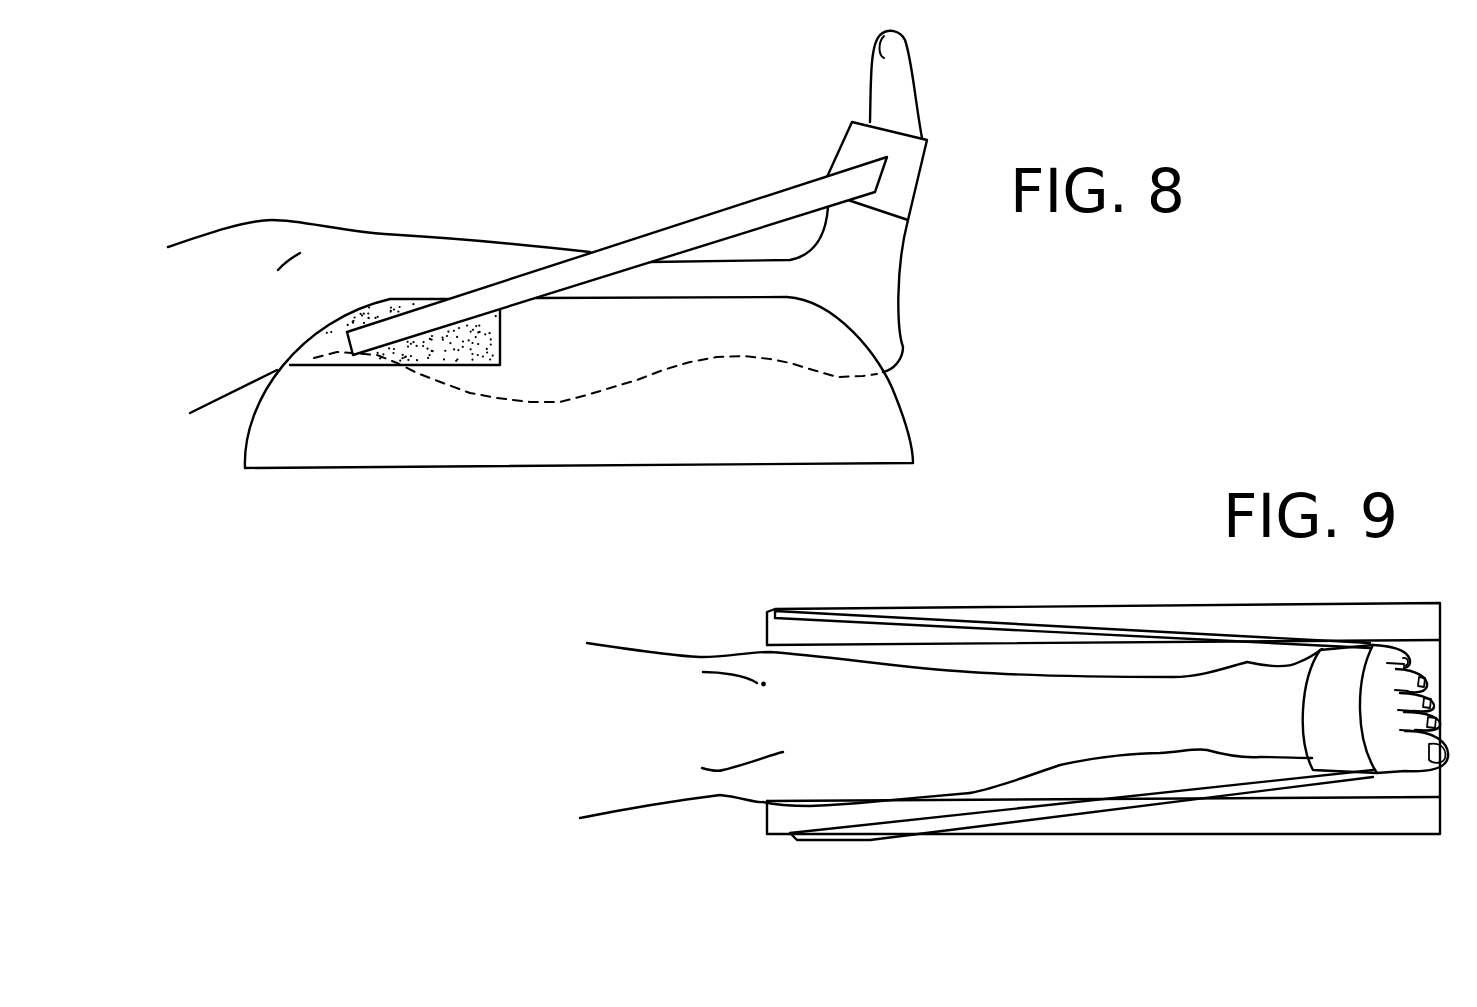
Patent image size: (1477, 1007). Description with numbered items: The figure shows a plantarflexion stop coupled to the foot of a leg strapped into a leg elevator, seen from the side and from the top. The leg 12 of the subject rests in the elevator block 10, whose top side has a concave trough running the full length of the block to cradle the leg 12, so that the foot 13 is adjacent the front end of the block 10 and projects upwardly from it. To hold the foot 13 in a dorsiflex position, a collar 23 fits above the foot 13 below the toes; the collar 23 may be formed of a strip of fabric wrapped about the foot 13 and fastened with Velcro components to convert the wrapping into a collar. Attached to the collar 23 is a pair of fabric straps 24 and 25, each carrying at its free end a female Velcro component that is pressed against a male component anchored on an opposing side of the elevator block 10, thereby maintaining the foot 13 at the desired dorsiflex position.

In FIG. 8, the block 10 is at (560, 450).
In FIG. 9, the block 10 is at (1343, 823).
In FIG. 8, the leg 12 is at (406, 247).
In FIG. 9, the leg 12 is at (971, 763).
In FIG. 8, the foot 13 is at (877, 263).
In FIG. 9, the foot 13 is at (1413, 757).
In FIG. 8, the collar 23 is at (920, 155).
In FIG. 9, the collar 23 is at (1322, 745).
In FIG. 8, the fabric strap 24 is at (668, 242).
In FIG. 9, the fabric strap 24 is at (1170, 795).
In FIG. 9, the fabric strap 25 is at (1120, 625).